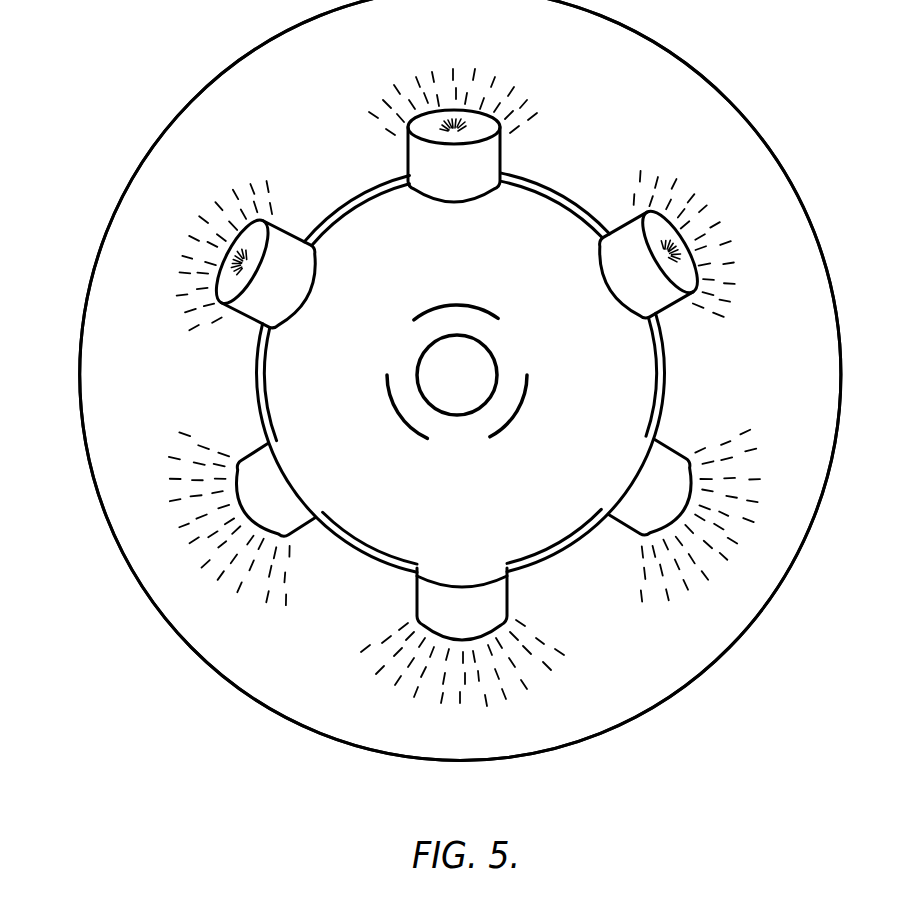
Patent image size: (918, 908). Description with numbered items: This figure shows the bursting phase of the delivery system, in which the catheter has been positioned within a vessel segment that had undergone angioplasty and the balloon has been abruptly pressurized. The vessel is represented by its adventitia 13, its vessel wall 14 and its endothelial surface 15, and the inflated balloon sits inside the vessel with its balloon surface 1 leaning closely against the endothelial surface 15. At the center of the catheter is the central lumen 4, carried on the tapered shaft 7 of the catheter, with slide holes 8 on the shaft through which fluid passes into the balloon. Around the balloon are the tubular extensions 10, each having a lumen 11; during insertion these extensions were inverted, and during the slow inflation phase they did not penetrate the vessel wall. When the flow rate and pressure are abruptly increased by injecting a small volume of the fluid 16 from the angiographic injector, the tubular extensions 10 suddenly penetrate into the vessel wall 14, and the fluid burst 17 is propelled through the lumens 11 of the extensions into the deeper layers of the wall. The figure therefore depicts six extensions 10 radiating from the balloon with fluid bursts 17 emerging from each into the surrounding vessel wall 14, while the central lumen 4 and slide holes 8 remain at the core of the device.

The balloon surface 1 is at (265, 407).
The central lumen 4 is at (452, 418).
The tapered shaft of the catheter 7 is at (397, 413).
The slide holes on the shaft 8 is at (523, 348).
The tubular extension 10 is at (673, 297).
The lumen of the tubular extension 11 is at (227, 263).
The adventitia 13 is at (735, 650).
The vessel wall 14 is at (700, 96).
The endothelial surface of the vessel 15 is at (400, 567).
The fluid 16 is at (280, 377).
The fluid burst into the vessel wall 17 is at (414, 78).